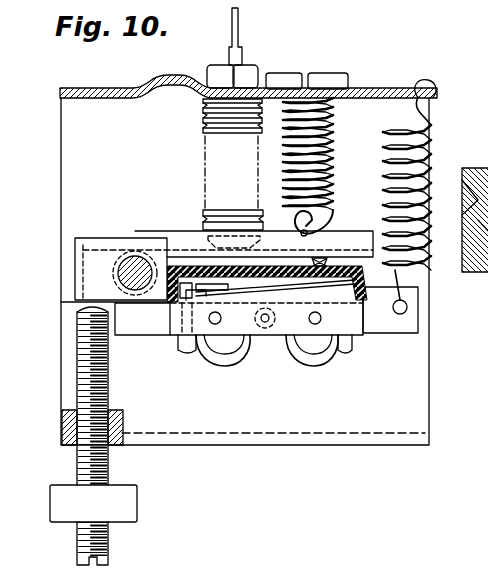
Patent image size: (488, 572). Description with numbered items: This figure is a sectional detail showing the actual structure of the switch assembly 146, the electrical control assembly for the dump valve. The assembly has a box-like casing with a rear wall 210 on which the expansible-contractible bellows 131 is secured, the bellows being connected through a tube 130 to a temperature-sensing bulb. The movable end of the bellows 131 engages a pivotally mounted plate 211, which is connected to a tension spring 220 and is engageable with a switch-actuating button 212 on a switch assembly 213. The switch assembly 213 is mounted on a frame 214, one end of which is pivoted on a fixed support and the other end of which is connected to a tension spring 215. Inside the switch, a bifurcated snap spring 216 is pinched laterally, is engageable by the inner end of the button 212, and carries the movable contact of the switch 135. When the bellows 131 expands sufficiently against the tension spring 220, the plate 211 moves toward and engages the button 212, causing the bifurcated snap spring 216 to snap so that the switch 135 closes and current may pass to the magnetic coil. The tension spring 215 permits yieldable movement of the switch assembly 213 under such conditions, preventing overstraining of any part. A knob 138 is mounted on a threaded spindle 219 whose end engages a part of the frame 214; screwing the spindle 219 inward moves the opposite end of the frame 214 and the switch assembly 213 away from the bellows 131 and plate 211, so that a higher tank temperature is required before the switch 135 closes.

The tube 130 is at (239, 14).
The expansible-contractible bellows 131 is at (203, 125).
The switch 135 is at (234, 288).
The knob 138 is at (137, 504).
The switch assembly 146 is at (224, 464).
The rear wall 210 is at (135, 88).
The pivotally mounted plate 211 is at (183, 232).
The switch-actuating button 212 is at (320, 258).
The switch assembly 213 is at (371, 298).
The frame 214 is at (138, 334).
The tension spring 215 is at (437, 141).
The bifurcated snap spring 216 is at (290, 293).
The threaded spindle 219 is at (84, 465).
The tension spring 220 is at (283, 106).